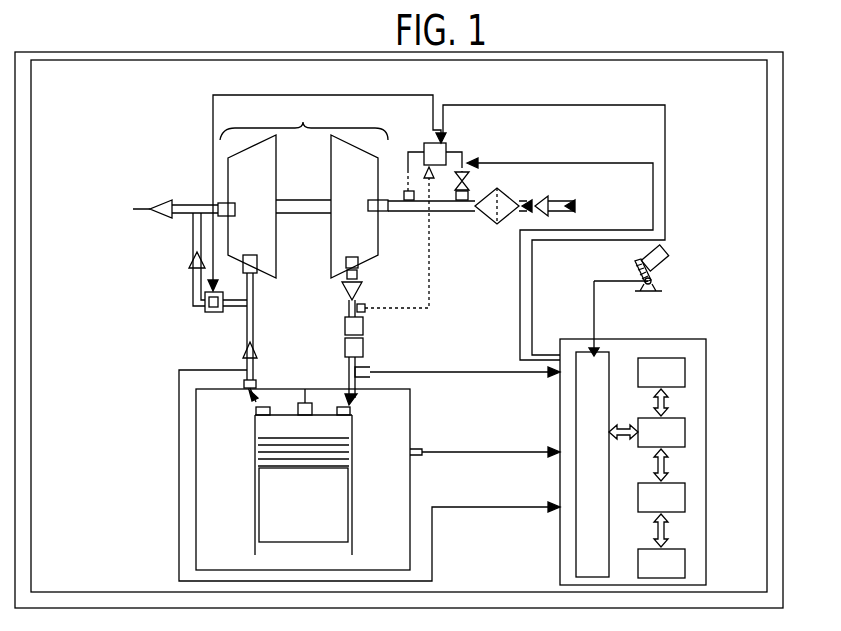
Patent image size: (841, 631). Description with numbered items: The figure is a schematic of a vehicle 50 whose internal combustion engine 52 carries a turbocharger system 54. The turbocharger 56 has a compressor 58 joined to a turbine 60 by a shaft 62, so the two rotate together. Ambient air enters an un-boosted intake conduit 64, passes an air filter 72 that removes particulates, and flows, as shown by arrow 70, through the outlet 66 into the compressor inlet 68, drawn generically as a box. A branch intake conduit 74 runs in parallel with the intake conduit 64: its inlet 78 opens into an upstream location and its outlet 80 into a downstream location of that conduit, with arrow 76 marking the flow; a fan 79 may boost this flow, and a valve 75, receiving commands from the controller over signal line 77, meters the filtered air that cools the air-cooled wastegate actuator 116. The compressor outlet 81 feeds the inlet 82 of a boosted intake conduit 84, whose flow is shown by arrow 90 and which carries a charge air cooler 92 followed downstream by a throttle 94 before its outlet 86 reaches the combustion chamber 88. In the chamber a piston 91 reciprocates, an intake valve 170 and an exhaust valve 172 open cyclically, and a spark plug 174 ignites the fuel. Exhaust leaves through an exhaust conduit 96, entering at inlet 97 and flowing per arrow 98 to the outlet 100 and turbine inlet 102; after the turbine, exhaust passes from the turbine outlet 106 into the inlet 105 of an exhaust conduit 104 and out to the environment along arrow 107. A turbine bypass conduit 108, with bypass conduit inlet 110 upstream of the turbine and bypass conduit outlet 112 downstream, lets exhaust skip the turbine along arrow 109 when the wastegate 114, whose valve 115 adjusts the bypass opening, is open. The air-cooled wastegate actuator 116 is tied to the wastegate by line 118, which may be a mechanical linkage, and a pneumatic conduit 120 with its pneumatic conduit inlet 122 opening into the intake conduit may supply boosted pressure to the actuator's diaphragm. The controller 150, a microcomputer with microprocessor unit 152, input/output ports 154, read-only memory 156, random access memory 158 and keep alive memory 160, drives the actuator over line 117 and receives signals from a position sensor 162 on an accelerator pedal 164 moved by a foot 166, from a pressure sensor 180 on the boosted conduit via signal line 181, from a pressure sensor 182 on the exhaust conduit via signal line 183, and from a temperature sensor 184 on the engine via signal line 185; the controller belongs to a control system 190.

The vehicle 50 is at (27, 52).
The internal combustion engine 52 is at (68, 60).
The turbocharger system 54 is at (105, 153).
The turbocharger 56 is at (304, 122).
The compressor 58 is at (354, 206).
The turbine 60 is at (252, 206).
The shaft 62 is at (320, 200).
The intake conduit 64 is at (484, 218).
The outlet 66 is at (380, 211).
The compressor inlet 68 is at (375, 200).
The arrow 70 is at (545, 200).
The air filter 72 is at (500, 205).
The intake conduit 74 is at (460, 150).
The valve 75 is at (478, 165).
The arrow 76 is at (438, 165).
The signal line 77 is at (558, 163).
The inlet 78 is at (464, 200).
The fan 79 is at (408, 160).
The outlet 80 is at (407, 191).
The compressor outlet 81 is at (352, 262).
The inlet 82 is at (358, 275).
The intake conduit 84 is at (350, 303).
The outlet 86 is at (349, 390).
The combustion chamber 88 is at (255, 428).
The arrow 90 is at (345, 288).
The piston 91 is at (303, 505).
The charge air cooler 92 is at (364, 326).
The throttle 94 is at (364, 347).
The exhaust conduit 96 is at (253, 330).
The inlet 97 is at (244, 384).
The arrow 98 is at (246, 345).
The outlet 100 is at (253, 278).
The turbine inlet 102 is at (260, 256).
The exhaust conduit 104 is at (210, 205).
The inlet 105 is at (228, 216).
The turbine outlet 106 is at (228, 203).
The arrow 107 is at (165, 205).
The turbine bypass conduit 108 is at (193, 290).
The arrow 109 is at (189, 262).
The bypass conduit inlet 110 is at (243, 305).
The bypass conduit outlet 112 is at (192, 216).
The wastegate 114 is at (205, 310).
The valve 115 is at (210, 312).
The air-cooled wastegate actuator 116 is at (436, 130).
The line 117 is at (532, 310).
The line 118 is at (245, 95).
The pneumatic conduit 120 is at (428, 280).
The pneumatic conduit inlet 122 is at (366, 306).
The controller 150 is at (660, 339).
The microprocessor unit 152 is at (685, 430).
The input/output ports 154 is at (610, 355).
The read-only memory 156 is at (685, 368).
The random access memory 158 is at (685, 495).
The keep alive memory 160 is at (685, 560).
The position sensor 162 is at (658, 288).
The accelerator pedal 164 is at (638, 270).
The foot 166 is at (668, 258).
The intake valve 170 is at (350, 412).
The exhaust valve 172 is at (256, 410).
The spark plug 174 is at (304, 395).
The pressure sensor 180 is at (362, 382).
The signal line 181 is at (480, 370).
The pressure sensor 182 is at (235, 369).
The signal line 183 is at (433, 505).
The temperature sensor 184 is at (423, 455).
The signal line 185 is at (455, 449).
The control system 190 is at (730, 208).